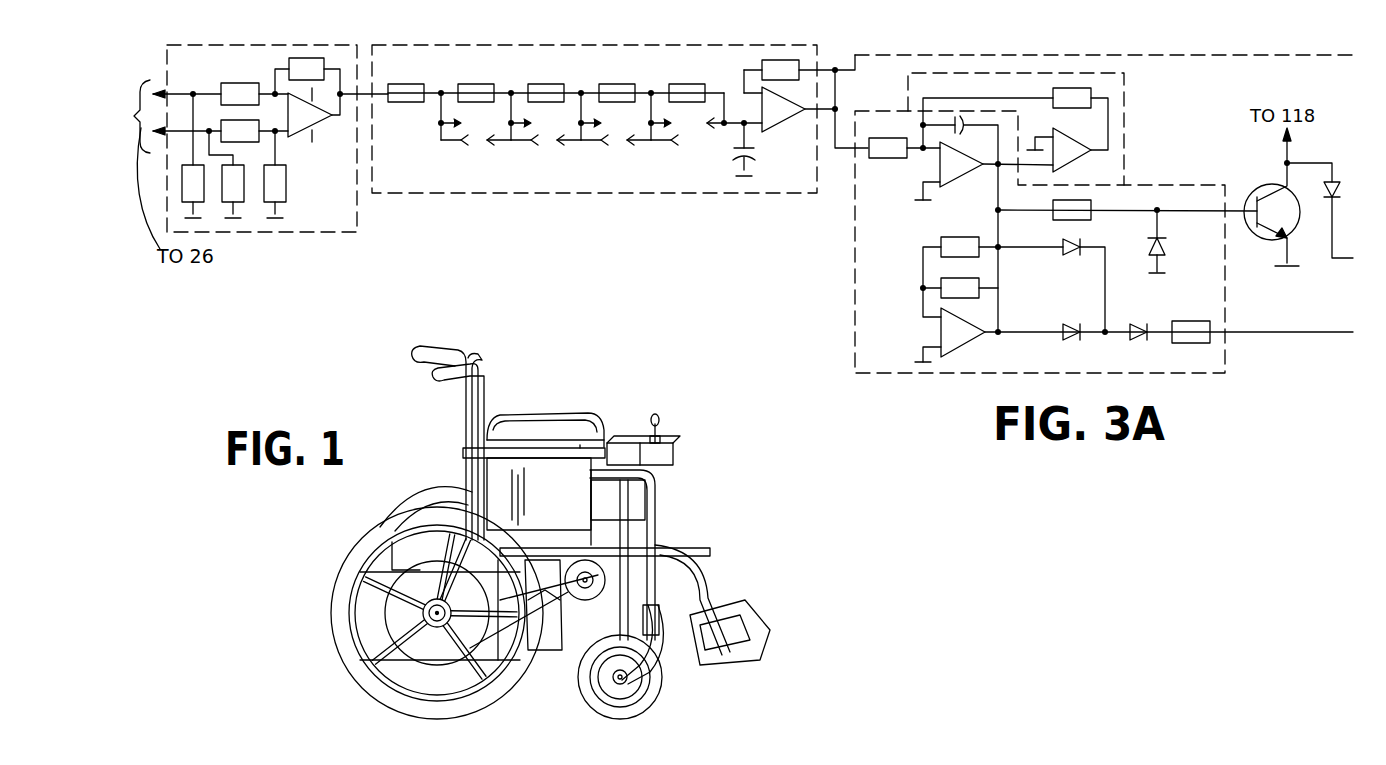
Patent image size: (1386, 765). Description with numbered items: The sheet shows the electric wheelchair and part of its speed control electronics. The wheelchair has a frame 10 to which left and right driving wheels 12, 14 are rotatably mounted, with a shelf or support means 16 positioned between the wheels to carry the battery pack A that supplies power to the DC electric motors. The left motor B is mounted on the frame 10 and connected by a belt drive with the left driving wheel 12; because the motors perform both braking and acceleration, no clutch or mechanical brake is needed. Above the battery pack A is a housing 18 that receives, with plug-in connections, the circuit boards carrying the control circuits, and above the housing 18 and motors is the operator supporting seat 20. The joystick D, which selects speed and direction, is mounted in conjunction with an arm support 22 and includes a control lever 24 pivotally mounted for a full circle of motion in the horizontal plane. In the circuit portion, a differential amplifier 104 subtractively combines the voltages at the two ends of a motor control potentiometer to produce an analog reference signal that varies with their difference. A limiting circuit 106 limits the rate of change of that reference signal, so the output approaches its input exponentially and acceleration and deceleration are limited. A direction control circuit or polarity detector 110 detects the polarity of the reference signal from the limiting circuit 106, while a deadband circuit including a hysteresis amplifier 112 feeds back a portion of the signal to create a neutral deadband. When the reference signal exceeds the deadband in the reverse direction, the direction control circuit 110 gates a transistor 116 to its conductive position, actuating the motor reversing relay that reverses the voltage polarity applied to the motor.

In FIG. 1, the frame 10 is at (652, 546).
In FIG. 1, the left driving wheel 12 is at (352, 594).
In FIG. 1, the right driving wheel 14 is at (448, 494).
In FIG. 1, the support means 16 is at (497, 660).
In FIG. 1, the housing 18 is at (406, 548).
In FIG. 1, the operator supporting seat 20 is at (623, 507).
In FIG. 1, the arm support 22 is at (580, 446).
In FIG. 1, the control lever 24 is at (662, 421).
In FIG. 1, the battery pack A is at (382, 634).
In FIG. 1, the left DC electric motor B is at (548, 590).
In FIG. 1, the joystick D is at (680, 454).
In FIG. 3A, the differential amplifier 104 is at (281, 233).
In FIG. 3A, the limiting circuit 106 is at (580, 193).
In FIG. 3A, the direction control circuit 110 is at (853, 221).
In FIG. 3A, the hysteresis amplifier 112 is at (1124, 98).
In FIG. 3A, the transistor 116 is at (1254, 190).